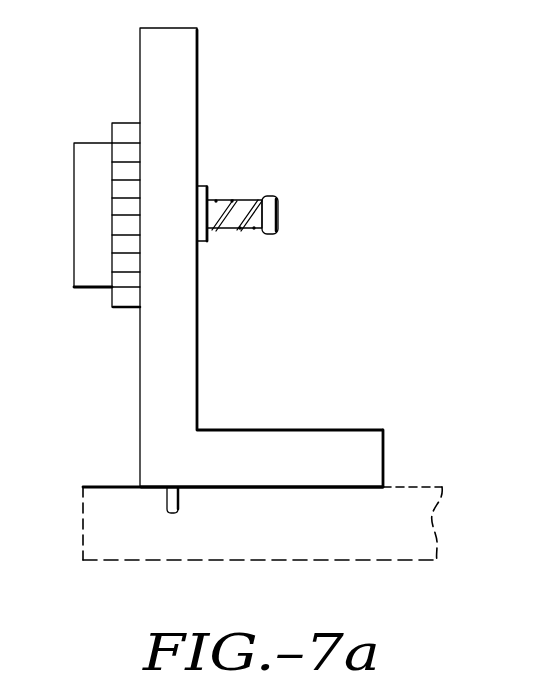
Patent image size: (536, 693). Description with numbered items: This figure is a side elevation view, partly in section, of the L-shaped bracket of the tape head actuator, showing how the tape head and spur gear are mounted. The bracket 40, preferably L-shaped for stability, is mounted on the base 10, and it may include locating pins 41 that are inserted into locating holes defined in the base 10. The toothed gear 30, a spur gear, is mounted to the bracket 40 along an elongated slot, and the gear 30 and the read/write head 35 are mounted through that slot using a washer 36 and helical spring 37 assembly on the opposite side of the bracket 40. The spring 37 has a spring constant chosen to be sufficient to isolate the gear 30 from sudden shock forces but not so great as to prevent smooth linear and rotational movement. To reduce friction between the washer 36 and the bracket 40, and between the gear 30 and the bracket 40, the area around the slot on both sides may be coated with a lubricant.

The base 10 is at (363, 535).
The toothed gear 30 is at (120, 302).
The read/write head 35 is at (88, 192).
The washer 36 is at (201, 187).
The helical spring 37 is at (238, 230).
The bracket 40 is at (187, 65).
The locating pins 41 is at (178, 512).